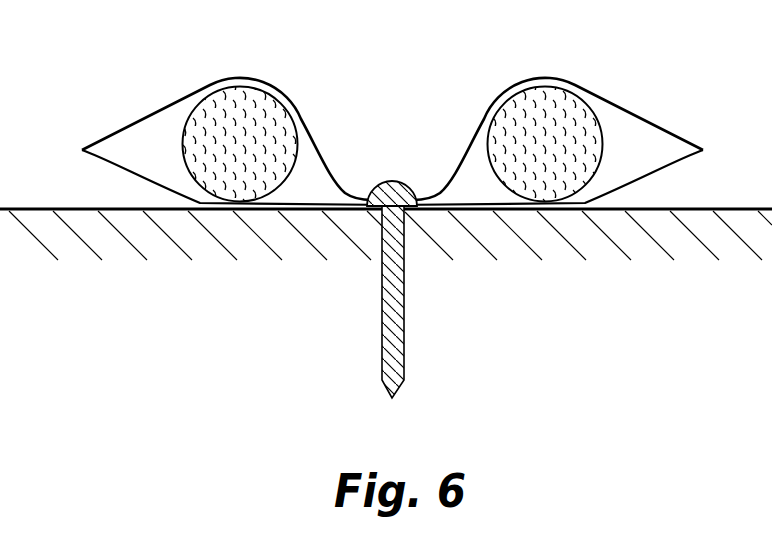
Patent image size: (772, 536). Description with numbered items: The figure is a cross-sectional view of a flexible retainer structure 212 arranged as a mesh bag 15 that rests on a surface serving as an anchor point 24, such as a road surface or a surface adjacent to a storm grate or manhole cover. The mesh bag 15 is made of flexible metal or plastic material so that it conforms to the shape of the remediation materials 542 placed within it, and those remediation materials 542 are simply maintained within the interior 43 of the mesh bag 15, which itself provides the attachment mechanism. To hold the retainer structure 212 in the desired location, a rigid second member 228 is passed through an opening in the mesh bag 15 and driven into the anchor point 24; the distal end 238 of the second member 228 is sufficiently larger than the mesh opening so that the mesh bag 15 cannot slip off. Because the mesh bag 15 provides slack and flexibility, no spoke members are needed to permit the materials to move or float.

The retainer structure 212 is at (141, 110).
The mesh bag 15 is at (648, 112).
The interior 43 is at (638, 155).
The remediation materials 542 is at (243, 100).
The distal end 238 is at (394, 179).
The rigid second member 228 is at (385, 310).
The anchor point 24 is at (403, 213).